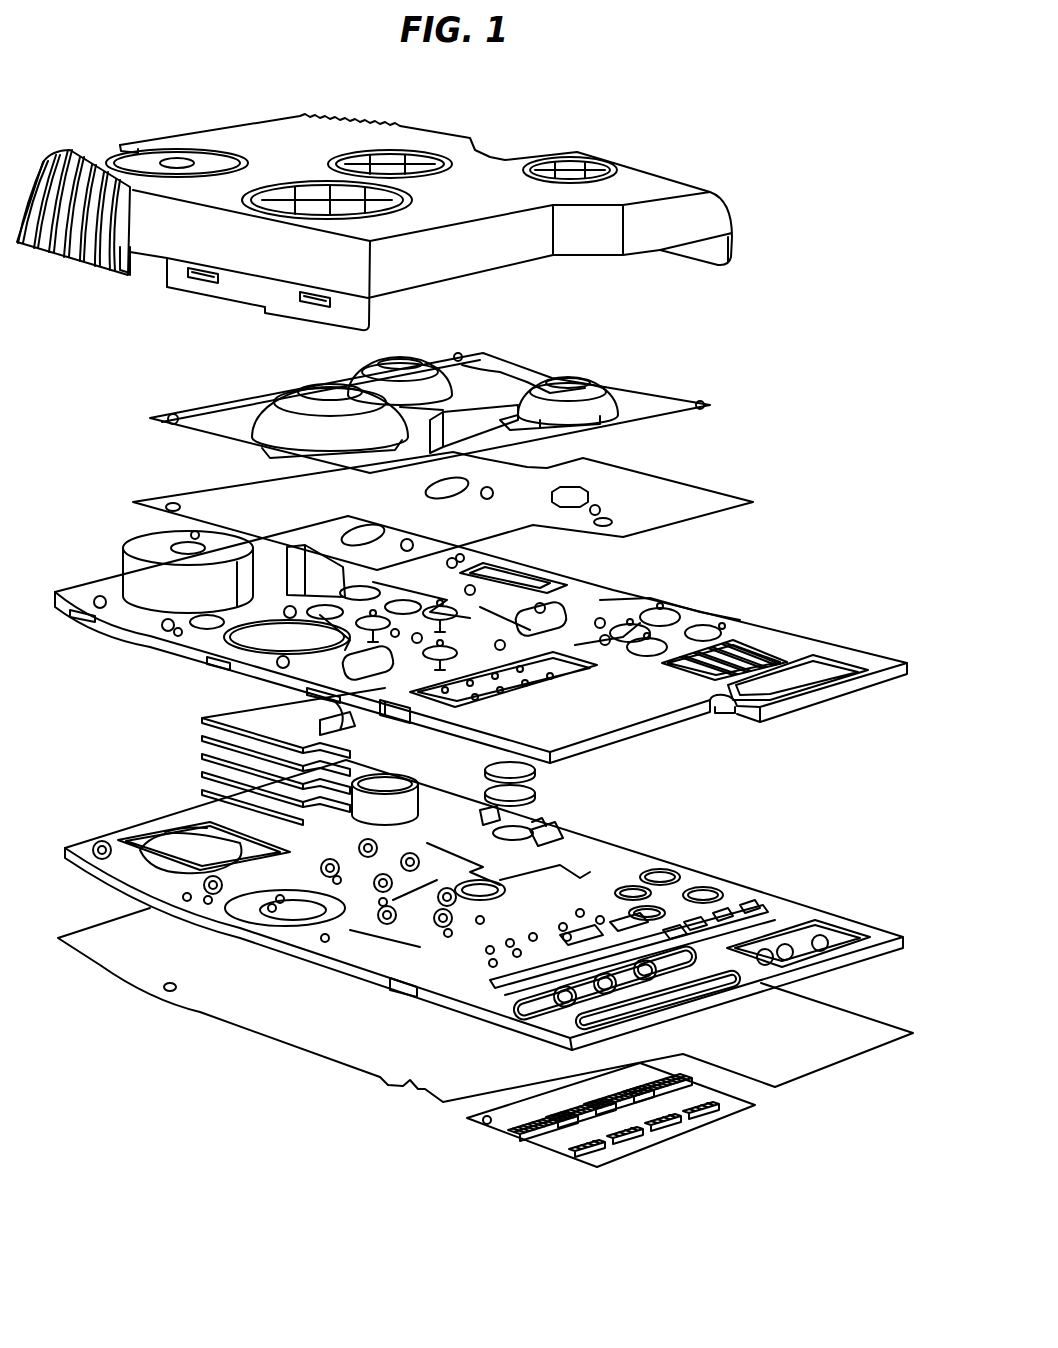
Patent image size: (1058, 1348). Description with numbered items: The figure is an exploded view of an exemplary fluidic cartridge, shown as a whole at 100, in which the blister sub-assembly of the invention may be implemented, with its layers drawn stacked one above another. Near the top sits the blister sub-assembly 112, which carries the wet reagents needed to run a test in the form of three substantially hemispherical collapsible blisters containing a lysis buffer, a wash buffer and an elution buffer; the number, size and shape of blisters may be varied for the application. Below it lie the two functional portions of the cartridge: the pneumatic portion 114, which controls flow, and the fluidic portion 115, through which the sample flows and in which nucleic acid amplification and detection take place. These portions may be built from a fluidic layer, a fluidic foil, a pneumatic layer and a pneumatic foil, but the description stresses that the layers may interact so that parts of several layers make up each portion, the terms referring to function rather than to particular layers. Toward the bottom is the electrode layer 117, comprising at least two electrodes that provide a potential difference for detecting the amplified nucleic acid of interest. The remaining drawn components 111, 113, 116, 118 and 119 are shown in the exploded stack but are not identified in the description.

The electronic device assembly 100 is at (699, 112).
The top cover housing 111 is at (733, 233).
The blister sub-assembly 112 is at (715, 405).
The spacer sheet 113 is at (753, 502).
The pneumatic portion 114 is at (908, 663).
The fluidic portion 115 is at (902, 937).
The bottom insulating sheet 116 is at (913, 1033).
The electrode layer 117 is at (733, 1115).
The coin cell batteries 118 is at (537, 775).
The stacked contact plates 119 is at (190, 711).